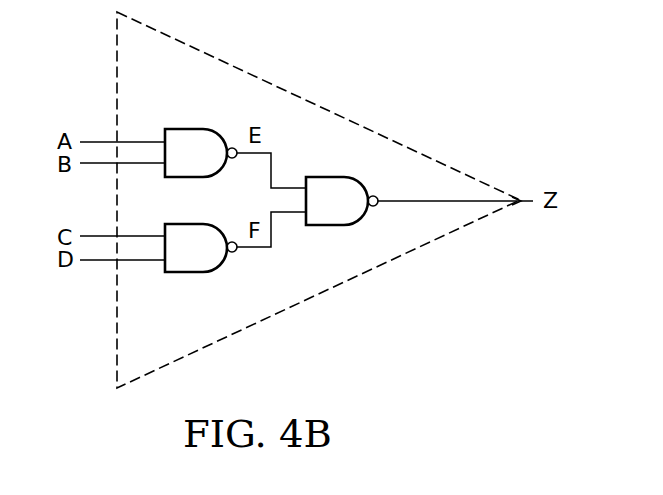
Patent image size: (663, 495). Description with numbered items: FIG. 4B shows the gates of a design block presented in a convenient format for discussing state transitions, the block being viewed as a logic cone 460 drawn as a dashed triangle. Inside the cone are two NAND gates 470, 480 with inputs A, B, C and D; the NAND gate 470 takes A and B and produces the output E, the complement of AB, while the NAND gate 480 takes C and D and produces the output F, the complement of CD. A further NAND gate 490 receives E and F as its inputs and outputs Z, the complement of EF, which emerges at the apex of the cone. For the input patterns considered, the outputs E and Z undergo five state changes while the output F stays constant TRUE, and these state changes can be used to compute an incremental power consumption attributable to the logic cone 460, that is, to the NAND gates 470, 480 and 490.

The logic cone 460 is at (117, 72).
The NAND gate 470 is at (188, 129).
The NAND gate 480 is at (188, 272).
The NAND gate 490 is at (330, 177).